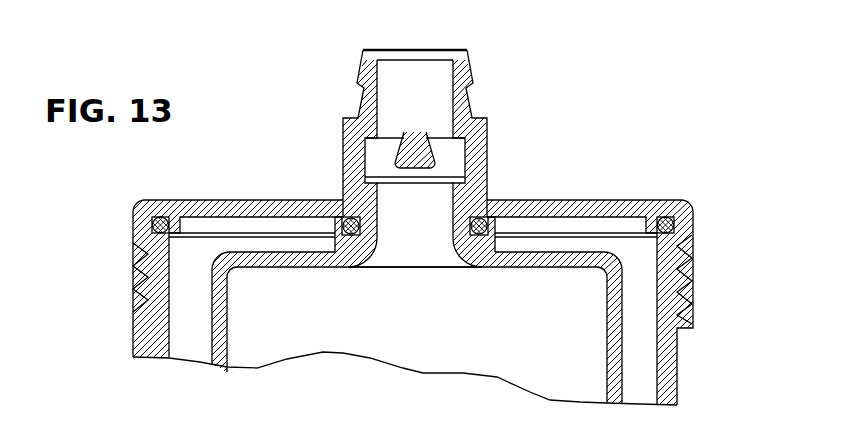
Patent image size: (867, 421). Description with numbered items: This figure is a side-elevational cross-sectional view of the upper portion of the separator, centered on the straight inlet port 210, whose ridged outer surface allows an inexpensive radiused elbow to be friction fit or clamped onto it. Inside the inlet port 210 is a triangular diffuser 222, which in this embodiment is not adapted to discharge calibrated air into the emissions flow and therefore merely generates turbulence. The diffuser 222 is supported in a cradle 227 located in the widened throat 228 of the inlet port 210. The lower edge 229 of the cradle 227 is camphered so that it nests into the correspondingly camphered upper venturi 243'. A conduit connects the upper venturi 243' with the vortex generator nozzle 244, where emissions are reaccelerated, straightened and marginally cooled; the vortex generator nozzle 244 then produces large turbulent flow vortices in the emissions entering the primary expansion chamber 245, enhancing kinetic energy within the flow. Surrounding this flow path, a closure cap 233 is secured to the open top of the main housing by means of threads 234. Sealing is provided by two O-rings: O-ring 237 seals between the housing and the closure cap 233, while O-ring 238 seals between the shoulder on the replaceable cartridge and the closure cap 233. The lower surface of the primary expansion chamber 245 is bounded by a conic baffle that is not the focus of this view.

The inlet port 210 is at (466, 74).
The diffuser 222 is at (416, 132).
The cradle 227 is at (384, 152).
The widened throat 228 is at (458, 154).
The lower edge of the cradle 229 is at (442, 184).
The closure cap 233 is at (618, 200).
The threads 234 is at (133, 276).
The O-ring 237 is at (690, 209).
The O-ring 238 is at (348, 268).
The upper venturi 243' is at (345, 160).
The vortex generator nozzle 244 is at (462, 268).
The primary expansion chamber 245 is at (435, 323).